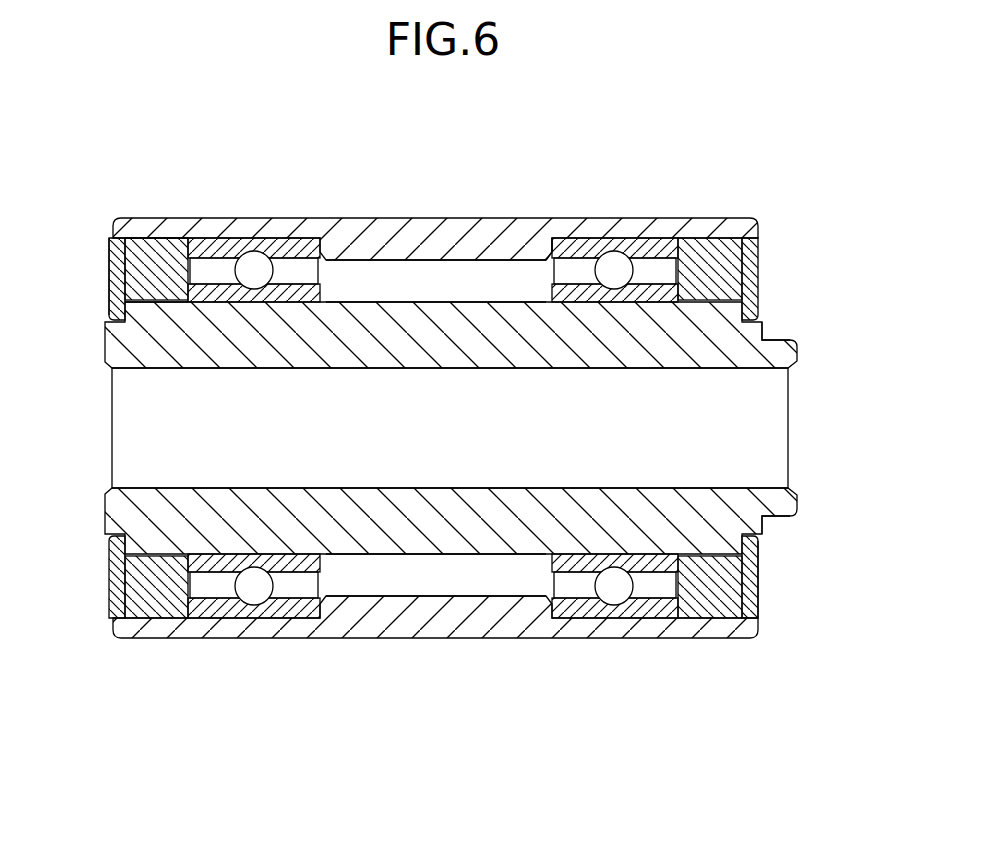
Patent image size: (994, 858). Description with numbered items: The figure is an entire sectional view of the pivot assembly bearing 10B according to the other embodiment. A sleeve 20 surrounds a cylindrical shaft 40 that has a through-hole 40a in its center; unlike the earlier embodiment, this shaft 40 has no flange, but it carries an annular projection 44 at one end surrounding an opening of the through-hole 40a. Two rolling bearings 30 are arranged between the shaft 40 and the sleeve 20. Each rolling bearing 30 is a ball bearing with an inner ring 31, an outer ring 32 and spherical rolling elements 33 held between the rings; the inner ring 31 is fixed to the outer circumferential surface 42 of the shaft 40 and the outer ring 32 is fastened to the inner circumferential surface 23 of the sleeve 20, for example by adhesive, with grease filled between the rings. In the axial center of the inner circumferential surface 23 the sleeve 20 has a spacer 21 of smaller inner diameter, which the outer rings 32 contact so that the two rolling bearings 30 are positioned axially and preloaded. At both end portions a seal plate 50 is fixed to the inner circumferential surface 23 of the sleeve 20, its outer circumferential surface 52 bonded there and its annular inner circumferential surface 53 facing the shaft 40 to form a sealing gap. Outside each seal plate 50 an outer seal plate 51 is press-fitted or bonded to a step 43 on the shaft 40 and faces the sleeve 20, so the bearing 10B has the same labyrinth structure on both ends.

The pivot assembly bearing 10B is at (462, 195).
The sleeve 20 is at (522, 217).
The spacer 21 is at (448, 260).
The inner circumferential surface 23 is at (562, 240).
The rolling bearing 30 is at (620, 236).
The inner ring 31 is at (650, 302).
The outer ring 32 is at (272, 252).
The rolling element 33 is at (263, 277).
The shaft 40 is at (102, 518).
The through-hole 40a is at (478, 468).
The outer circumferential surface 42 is at (380, 300).
The step 43 is at (111, 306).
The annular projection 44 is at (787, 341).
The seal plate 50 is at (707, 267).
The outer seal plate 51 is at (758, 270).
The outer circumferential surface 52 is at (158, 245).
The annular inner circumferential surface 53 is at (155, 300).